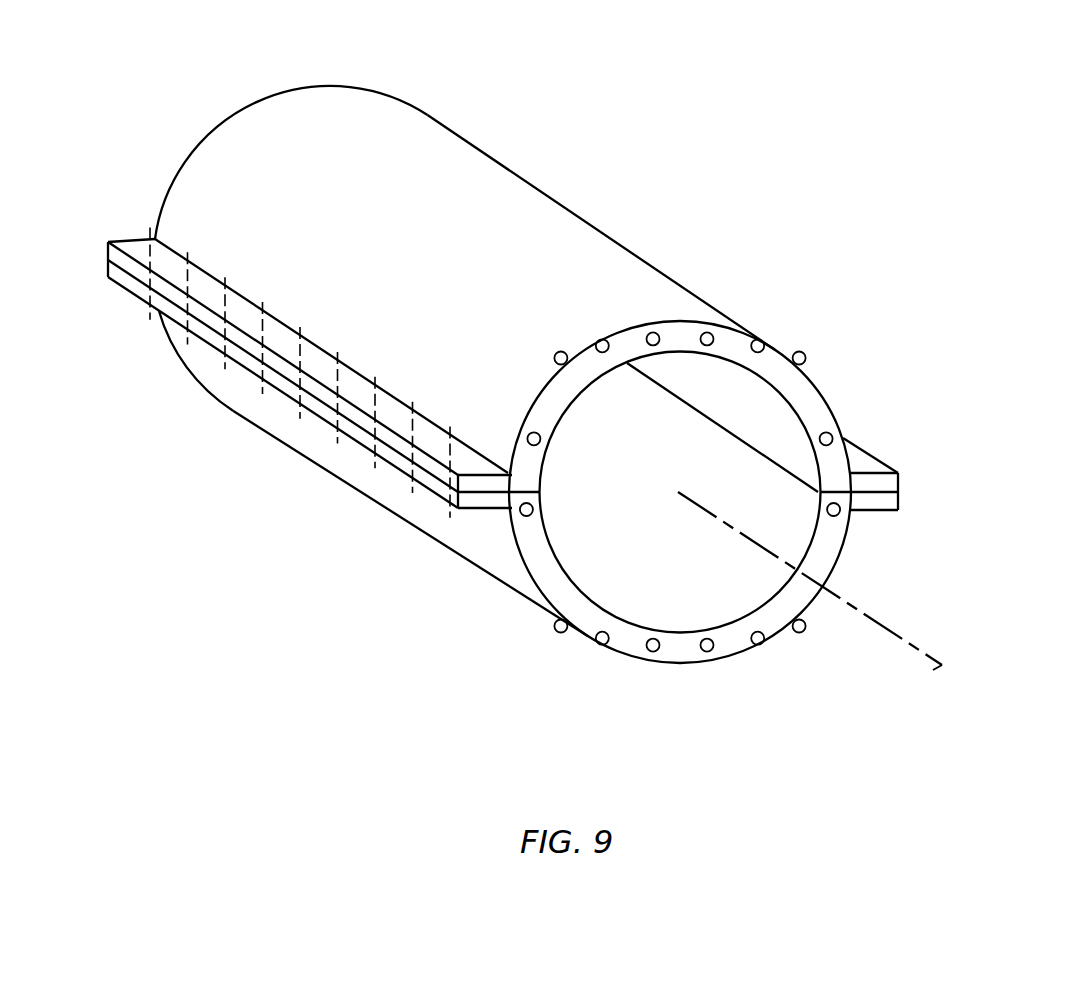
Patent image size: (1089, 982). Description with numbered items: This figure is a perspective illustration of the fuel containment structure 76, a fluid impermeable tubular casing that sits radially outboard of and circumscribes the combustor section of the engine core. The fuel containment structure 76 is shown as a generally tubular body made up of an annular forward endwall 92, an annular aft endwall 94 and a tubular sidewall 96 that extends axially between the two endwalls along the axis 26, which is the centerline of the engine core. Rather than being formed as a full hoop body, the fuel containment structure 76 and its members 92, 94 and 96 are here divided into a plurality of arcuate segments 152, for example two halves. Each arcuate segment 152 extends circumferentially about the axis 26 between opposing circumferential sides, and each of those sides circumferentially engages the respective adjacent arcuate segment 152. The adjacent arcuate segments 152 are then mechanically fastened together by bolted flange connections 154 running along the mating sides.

The axis 26 is at (932, 670).
The fuel containment structure 76 is at (714, 402).
The annular forward endwall 92 is at (590, 383).
The annular aft endwall 94 is at (202, 140).
The tubular sidewall 96 is at (518, 178).
The arcuate segments 152 is at (631, 234).
The bolted flange connections 154 is at (334, 440).